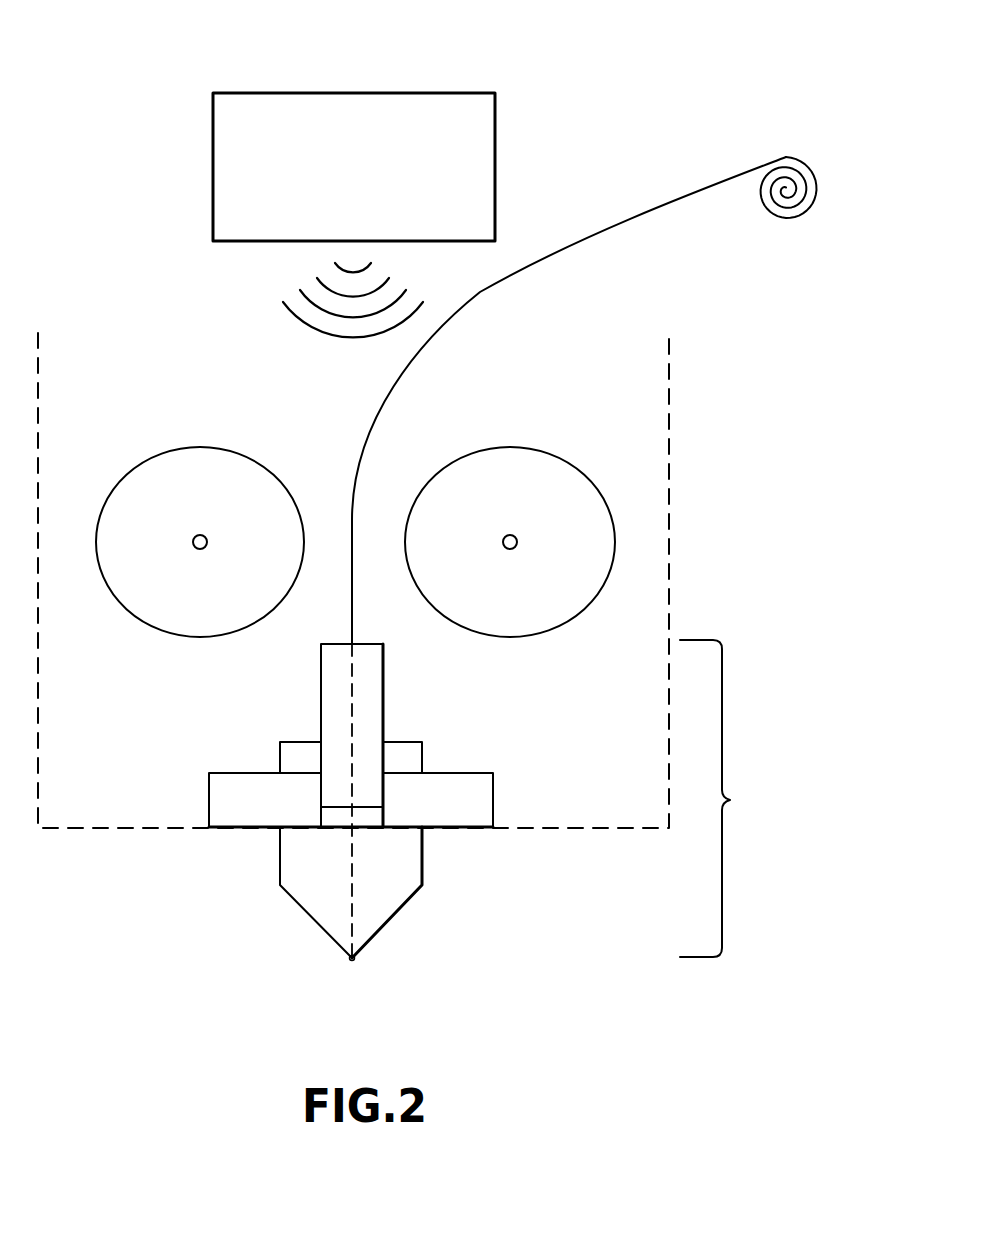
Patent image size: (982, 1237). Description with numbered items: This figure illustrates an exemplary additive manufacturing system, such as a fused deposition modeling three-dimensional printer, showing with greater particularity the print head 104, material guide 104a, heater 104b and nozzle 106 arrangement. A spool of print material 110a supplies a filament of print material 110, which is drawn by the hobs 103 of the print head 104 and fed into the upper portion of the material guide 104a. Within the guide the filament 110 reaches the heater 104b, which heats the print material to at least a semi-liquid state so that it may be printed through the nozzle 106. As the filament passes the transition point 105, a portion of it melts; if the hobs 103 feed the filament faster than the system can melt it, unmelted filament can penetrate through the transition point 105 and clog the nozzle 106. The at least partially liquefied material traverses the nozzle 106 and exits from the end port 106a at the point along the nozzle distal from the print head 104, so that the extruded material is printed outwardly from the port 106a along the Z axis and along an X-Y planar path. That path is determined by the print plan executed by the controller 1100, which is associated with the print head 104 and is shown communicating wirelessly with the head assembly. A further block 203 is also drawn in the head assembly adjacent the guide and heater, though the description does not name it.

The controller 1100 is at (460, 93).
The print material 110 is at (517, 270).
The spool of print material 110a is at (786, 222).
The hobs 103 is at (183, 447).
The print head 104 is at (730, 798).
The material guide 104a is at (321, 676).
The heater 104b is at (209, 792).
The sensor block 203 is at (278, 750).
The transition point 105 is at (323, 822).
The nozzle 106 is at (423, 882).
The end port 106a is at (350, 960).